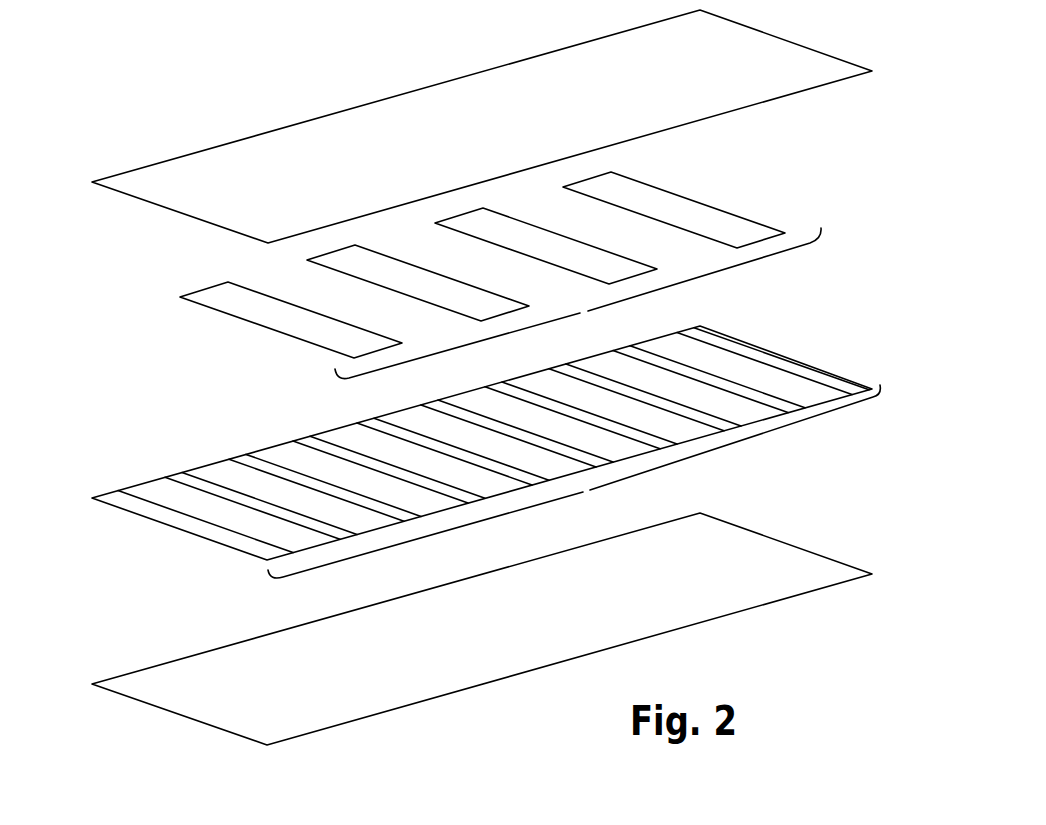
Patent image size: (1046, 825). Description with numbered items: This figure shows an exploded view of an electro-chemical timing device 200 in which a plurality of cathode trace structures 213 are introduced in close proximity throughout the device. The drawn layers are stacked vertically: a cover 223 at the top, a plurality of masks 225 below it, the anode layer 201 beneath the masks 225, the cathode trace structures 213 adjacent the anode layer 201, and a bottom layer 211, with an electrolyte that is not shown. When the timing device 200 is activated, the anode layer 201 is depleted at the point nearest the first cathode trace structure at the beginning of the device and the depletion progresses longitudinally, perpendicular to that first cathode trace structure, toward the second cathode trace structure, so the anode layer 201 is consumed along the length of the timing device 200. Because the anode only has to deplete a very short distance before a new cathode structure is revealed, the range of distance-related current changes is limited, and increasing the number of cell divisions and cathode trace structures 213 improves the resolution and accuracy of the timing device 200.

The timing device 200 is at (110, 70).
The cover 223 is at (133, 197).
The masks 225 is at (583, 312).
The anode layer 201 is at (133, 513).
The cathode trace structures 213 is at (583, 491).
The bottom layer 211 is at (133, 700).